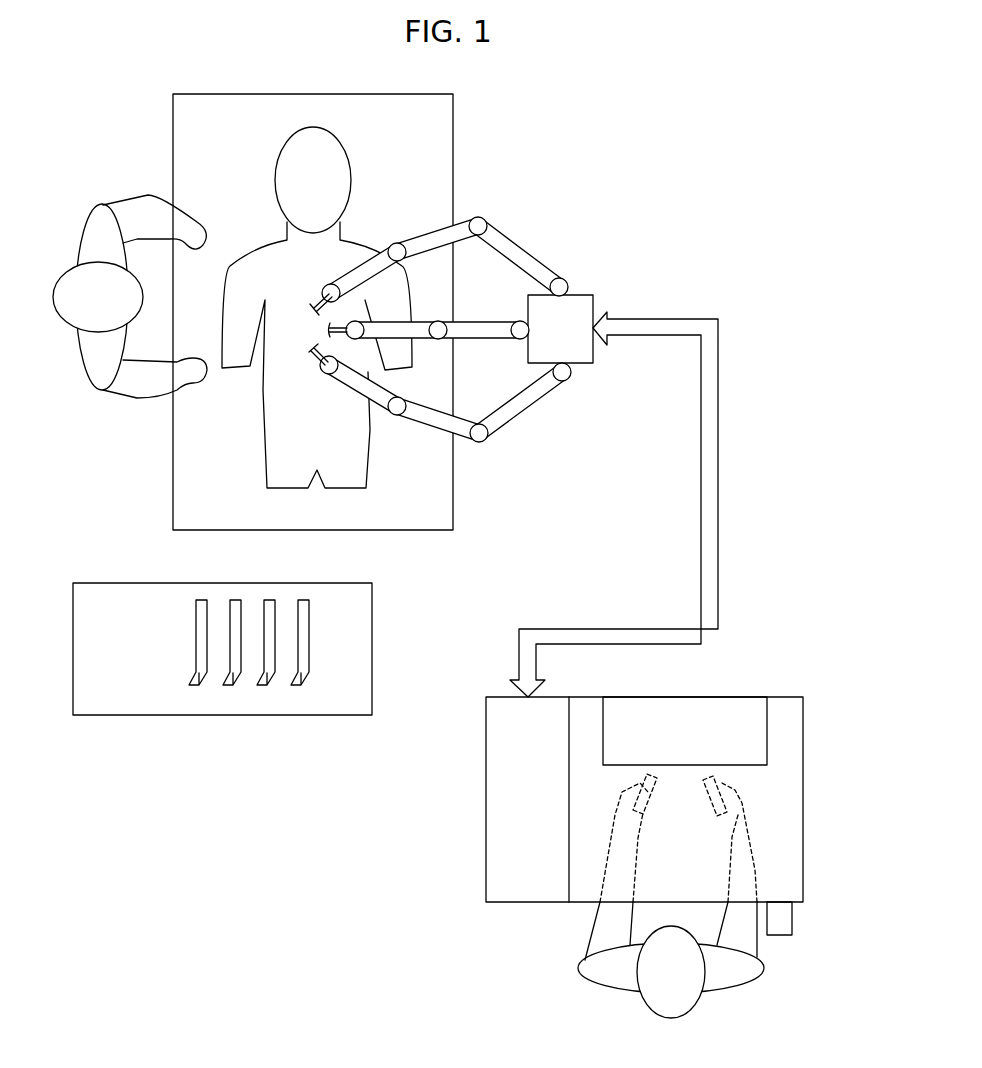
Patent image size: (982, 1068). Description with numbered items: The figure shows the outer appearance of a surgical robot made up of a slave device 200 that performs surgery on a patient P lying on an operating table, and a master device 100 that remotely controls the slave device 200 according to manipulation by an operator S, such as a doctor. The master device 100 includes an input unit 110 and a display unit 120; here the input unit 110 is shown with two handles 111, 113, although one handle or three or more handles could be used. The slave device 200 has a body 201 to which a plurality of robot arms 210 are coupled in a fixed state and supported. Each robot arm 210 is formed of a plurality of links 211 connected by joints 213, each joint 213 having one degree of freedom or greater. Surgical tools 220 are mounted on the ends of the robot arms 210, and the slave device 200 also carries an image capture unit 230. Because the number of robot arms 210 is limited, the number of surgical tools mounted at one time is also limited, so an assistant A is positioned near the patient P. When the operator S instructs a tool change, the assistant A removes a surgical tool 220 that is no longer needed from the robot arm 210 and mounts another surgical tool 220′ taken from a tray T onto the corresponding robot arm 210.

The master device 100 is at (670, 778).
The input unit 110 is at (680, 816).
The handle 111 is at (659, 795).
The handle 113 is at (702, 806).
The display unit 120 is at (767, 730).
The slave device 200 is at (472, 301).
The body 201 is at (595, 358).
The robot arm 210 is at (452, 301).
The link 211 is at (532, 258).
The joint 213 is at (478, 237).
The surgical tool 220 is at (310, 305).
The surgical tool 220′ is at (196, 640).
The image capture unit 230 is at (323, 331).
The patient P is at (268, 250).
The assistant A is at (83, 367).
The tray T is at (126, 583).
The operator S is at (732, 988).